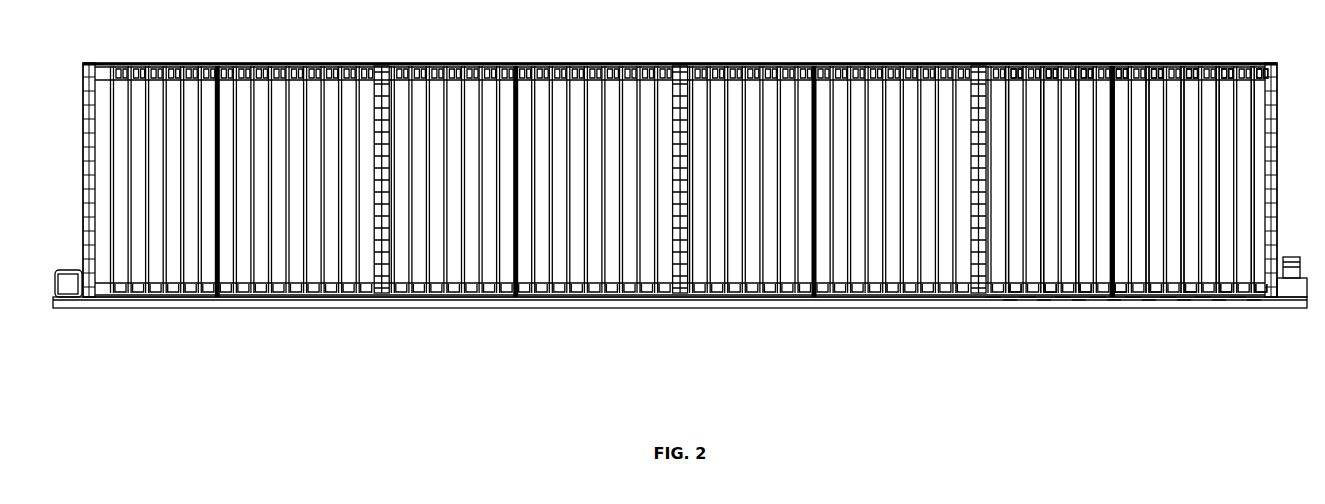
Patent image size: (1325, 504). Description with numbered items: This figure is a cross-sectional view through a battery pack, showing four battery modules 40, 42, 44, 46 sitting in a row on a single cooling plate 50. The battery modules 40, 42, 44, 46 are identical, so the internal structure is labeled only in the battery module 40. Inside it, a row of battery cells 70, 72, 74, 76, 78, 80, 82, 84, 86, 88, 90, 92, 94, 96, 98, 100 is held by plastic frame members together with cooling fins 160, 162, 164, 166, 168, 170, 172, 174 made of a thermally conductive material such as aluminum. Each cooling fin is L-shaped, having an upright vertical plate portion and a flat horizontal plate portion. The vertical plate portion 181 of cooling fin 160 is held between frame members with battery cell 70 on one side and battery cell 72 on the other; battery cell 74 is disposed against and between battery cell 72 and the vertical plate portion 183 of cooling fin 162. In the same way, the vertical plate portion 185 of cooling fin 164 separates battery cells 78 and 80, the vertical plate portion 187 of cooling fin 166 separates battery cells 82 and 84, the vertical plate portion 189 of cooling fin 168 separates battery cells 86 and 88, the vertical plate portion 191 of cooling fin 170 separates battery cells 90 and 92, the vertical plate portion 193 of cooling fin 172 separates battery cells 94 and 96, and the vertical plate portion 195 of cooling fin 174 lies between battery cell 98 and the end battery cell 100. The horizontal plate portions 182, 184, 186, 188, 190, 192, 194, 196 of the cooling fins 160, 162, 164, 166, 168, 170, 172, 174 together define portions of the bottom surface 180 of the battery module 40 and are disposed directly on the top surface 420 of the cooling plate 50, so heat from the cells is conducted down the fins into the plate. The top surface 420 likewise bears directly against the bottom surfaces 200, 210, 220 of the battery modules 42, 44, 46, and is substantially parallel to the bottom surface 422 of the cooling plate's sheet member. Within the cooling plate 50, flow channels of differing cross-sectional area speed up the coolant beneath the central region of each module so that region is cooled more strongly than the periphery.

The battery module 40 is at (1282, 90).
The battery module 42 is at (846, 58).
The battery module 44 is at (548, 58).
The battery module 46 is at (251, 58).
The cooling plate 50 is at (70, 312).
The battery cell 70 is at (990, 124).
The battery cell 72 is at (1007, 158).
The battery cell 74 is at (1024, 124).
The battery cell 76 is at (1042, 158).
The battery cell 78 is at (1059, 124).
The battery cell 80 is at (1075, 158).
The battery cell 82 is at (1092, 124).
The battery cell 84 is at (1110, 158).
The battery cell 86 is at (1127, 124).
The battery cell 88 is at (1145, 158).
The battery cell 90 is at (1162, 124).
The battery cell 92 is at (1180, 158).
The battery cell 94 is at (1197, 124).
The battery cell 96 is at (1214, 158).
The battery cell 98 is at (1230, 124).
The battery cell 100 is at (1258, 111).
The cooling fin 160 is at (993, 306).
The cooling fin 162 is at (1028, 306).
The cooling fin 164 is at (1063, 306).
The cooling fin 166 is at (1098, 306).
The cooling fin 168 is at (1133, 306).
The cooling fin 170 is at (1168, 306).
The cooling fin 172 is at (1203, 306).
The cooling fin 174 is at (1238, 306).
The bottom surface 180 is at (1265, 310).
The vertical plate portion 181 is at (1005, 194).
The horizontal plate portion 182 is at (1010, 306).
The vertical plate portion 183 is at (1040, 208).
The horizontal plate portion 184 is at (1044, 306).
The vertical plate portion 185 is at (1072, 225).
The horizontal plate portion 186 is at (1079, 306).
The vertical plate portion 187 is at (1107, 242).
The horizontal plate portion 188 is at (1114, 306).
The vertical plate portion 189 is at (1143, 200).
The horizontal plate portion 190 is at (1149, 306).
The vertical plate portion 191 is at (1180, 217).
The horizontal plate portion 192 is at (1184, 306).
The vertical plate portion 193 is at (1215, 226).
The horizontal plate portion 194 is at (1219, 306).
The vertical plate portion 195 is at (1247, 240).
The horizontal plate portion 196 is at (1254, 306).
The bottom surface 200 is at (811, 300).
The bottom surface 210 is at (513, 300).
The bottom surface 220 is at (216, 300).
The top surface 420 is at (72, 274).
The bottom surface 422 is at (136, 308).